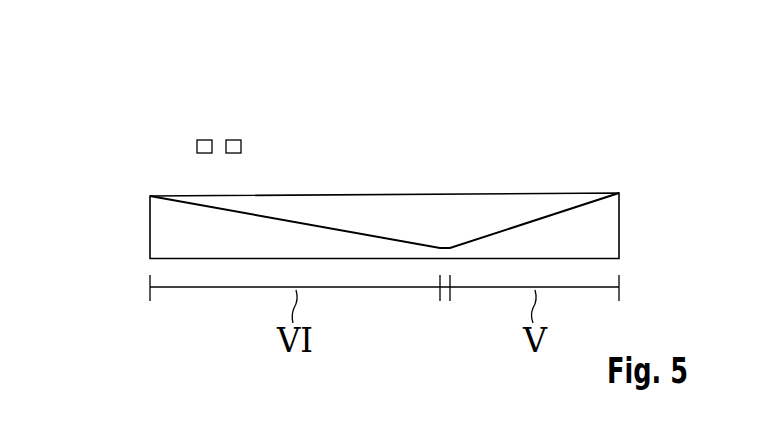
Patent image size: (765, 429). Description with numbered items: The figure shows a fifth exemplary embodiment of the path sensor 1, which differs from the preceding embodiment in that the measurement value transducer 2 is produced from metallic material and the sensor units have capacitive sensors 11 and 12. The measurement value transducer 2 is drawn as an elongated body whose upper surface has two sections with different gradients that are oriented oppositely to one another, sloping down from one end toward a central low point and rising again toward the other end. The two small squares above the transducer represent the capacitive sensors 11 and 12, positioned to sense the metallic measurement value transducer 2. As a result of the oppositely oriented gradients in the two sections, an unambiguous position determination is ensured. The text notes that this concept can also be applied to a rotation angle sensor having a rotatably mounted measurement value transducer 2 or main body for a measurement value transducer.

The path sensor 1 is at (339, 157).
The measurement value transducer 2 is at (585, 214).
The capacitive sensor 11 is at (197, 147).
The capacitive sensor 12 is at (241, 147).